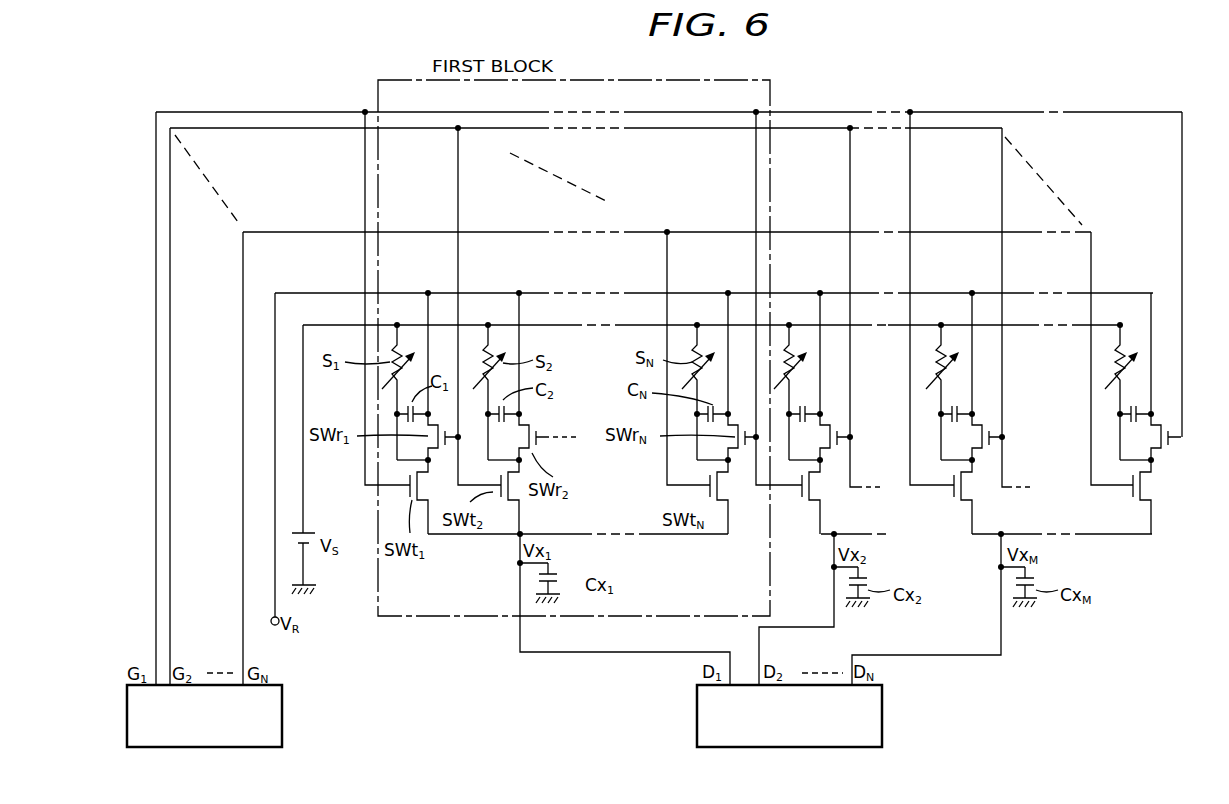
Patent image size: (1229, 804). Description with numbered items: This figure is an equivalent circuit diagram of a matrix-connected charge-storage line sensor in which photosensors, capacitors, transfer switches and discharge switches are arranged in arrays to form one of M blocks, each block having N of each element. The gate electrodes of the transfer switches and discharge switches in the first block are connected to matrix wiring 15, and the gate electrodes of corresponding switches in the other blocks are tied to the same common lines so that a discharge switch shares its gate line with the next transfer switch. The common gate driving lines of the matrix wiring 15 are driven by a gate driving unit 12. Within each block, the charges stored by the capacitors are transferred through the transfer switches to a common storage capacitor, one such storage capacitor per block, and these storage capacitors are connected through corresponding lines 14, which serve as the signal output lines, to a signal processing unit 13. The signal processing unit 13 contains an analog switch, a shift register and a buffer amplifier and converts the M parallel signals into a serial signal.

The gate driving unit 12 is at (282, 700).
The signal processing unit 13 is at (882, 711).
The lines 14 is at (934, 655).
The matrix wiring 15 is at (1186, 115).